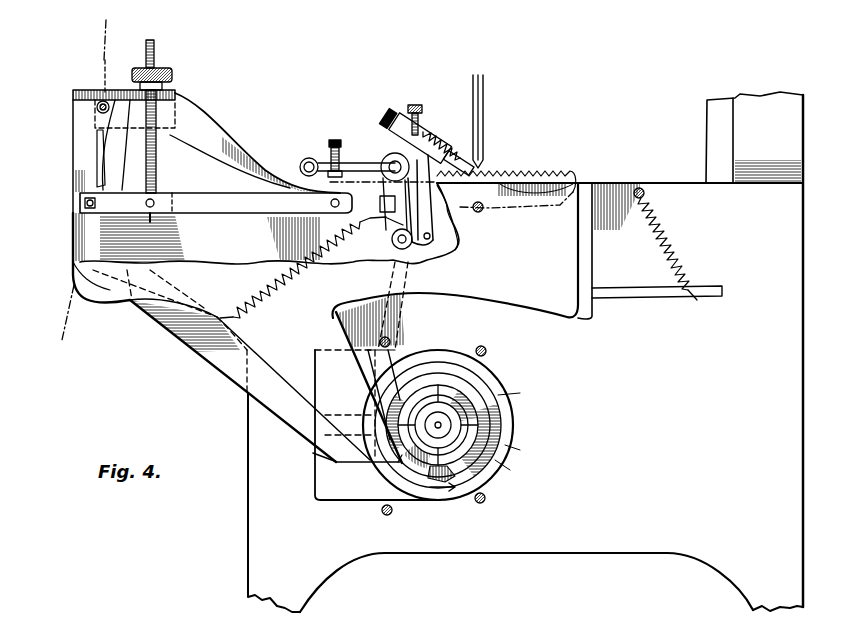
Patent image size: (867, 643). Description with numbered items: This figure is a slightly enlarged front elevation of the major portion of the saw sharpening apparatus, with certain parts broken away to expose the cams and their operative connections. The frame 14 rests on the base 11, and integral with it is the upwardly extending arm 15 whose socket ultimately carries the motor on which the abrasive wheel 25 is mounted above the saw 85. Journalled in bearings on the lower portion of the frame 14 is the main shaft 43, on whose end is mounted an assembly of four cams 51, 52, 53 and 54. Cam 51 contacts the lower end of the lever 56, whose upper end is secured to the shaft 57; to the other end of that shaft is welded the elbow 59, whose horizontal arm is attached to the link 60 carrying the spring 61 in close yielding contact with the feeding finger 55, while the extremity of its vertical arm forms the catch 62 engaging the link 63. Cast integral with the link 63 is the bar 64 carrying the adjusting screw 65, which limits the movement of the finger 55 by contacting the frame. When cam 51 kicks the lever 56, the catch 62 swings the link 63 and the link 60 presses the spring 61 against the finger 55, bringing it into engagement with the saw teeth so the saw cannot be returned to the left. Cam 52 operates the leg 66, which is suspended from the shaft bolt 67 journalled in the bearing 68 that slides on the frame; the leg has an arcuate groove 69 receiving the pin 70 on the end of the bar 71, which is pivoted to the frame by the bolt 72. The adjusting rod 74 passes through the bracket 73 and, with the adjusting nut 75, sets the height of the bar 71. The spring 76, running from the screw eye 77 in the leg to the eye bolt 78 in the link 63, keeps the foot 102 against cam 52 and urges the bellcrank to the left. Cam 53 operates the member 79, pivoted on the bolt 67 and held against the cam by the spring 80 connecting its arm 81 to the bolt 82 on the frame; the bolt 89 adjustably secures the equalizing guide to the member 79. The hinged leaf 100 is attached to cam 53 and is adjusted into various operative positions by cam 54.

The base 11 is at (92, 44).
The frame 14 is at (525, 353).
The upwardly extending arm 15 is at (712, 127).
The abrasive wheel 25 is at (486, 102).
The main shaft 43 is at (437, 432).
The cam 51 is at (378, 462).
The cam 52 is at (472, 378).
The cam 53 is at (470, 402).
The cam 54 is at (478, 414).
The feeding finger 55 is at (445, 145).
The lever 56 is at (395, 352).
The shaft 57 is at (405, 258).
The elbow 59 is at (394, 243).
The link 60 is at (456, 222).
The spring 61 is at (418, 126).
The catch 62 is at (382, 205).
The link 63 is at (396, 161).
The bar 64 is at (365, 158).
The adjusting screw 65 is at (336, 140).
The leg 66 is at (215, 371).
The shaft bolt 67 is at (95, 108).
The bearing 68 is at (124, 135).
The arcuate groove 69 is at (95, 175).
The pin 70 is at (86, 206).
The bar 71 is at (210, 196).
The bolt 72 is at (330, 203).
The bracket 73 is at (165, 93).
The adjusting rod 74 is at (154, 50).
The adjusting nut 75 is at (172, 72).
The spring 76 is at (300, 282).
The screw eye 77 is at (235, 320).
The eye bolt 78 is at (368, 224).
The member 79 is at (502, 305).
The spring 80 is at (677, 250).
The arm 81 is at (647, 304).
The bolt 82 is at (642, 187).
The saw 85 is at (541, 170).
The bolt 89 is at (480, 212).
The hinged leaf 100 is at (490, 455).
The foot 102 is at (400, 462).